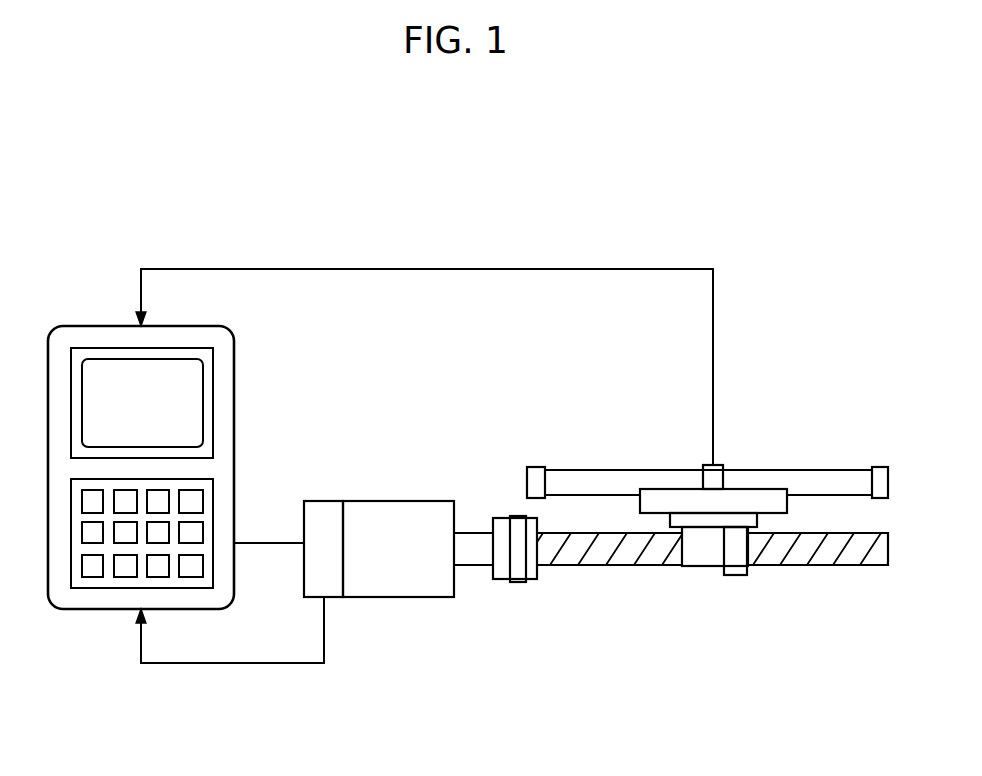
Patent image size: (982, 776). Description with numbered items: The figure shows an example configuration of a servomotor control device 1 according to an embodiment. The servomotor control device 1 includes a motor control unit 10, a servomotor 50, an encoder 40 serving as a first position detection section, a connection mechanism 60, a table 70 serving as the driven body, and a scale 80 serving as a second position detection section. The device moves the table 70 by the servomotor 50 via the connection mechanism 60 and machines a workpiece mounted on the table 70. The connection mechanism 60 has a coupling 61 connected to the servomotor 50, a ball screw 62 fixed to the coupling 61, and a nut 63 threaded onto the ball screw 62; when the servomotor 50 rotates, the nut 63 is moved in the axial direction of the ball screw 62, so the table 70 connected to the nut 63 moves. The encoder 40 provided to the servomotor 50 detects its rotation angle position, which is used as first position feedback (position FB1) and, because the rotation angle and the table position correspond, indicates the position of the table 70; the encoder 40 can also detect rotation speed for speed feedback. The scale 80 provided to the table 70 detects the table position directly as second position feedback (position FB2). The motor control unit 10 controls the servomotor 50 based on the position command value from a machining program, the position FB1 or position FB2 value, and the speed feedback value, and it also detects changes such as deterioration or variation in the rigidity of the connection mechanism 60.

The servomotor control device 1 is at (578, 160).
The motor control unit 10 is at (234, 347).
The encoder 40 is at (318, 500).
The servomotor 50 is at (403, 500).
The connection mechanism 60 is at (752, 652).
The coupling 61 is at (525, 584).
The ball screw 62 is at (622, 568).
The nut 63 is at (733, 577).
The table 70 is at (757, 489).
The scale 80 is at (612, 470).